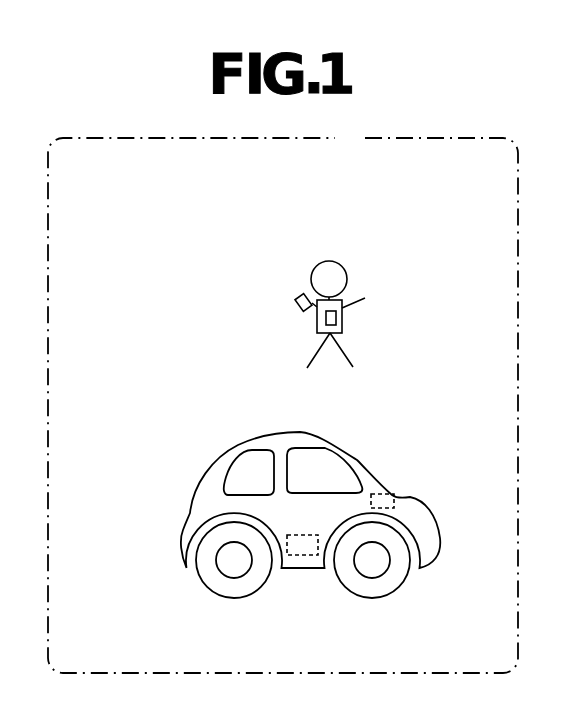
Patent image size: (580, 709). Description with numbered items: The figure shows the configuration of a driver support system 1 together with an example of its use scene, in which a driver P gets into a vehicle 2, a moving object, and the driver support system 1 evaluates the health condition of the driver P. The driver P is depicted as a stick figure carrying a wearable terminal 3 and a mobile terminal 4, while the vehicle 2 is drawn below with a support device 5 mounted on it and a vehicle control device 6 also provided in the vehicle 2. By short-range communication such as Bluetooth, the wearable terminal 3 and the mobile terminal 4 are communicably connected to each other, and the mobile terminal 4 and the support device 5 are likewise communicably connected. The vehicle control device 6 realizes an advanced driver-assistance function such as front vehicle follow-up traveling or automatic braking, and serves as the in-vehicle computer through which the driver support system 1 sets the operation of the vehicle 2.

The driver support system 1 is at (356, 150).
The vehicle 2 is at (280, 440).
The wearable terminal 3 is at (303, 293).
The mobile terminal 4 is at (337, 318).
The support device 5 is at (299, 556).
The vehicle control device 6 is at (397, 491).
The driver P is at (318, 261).